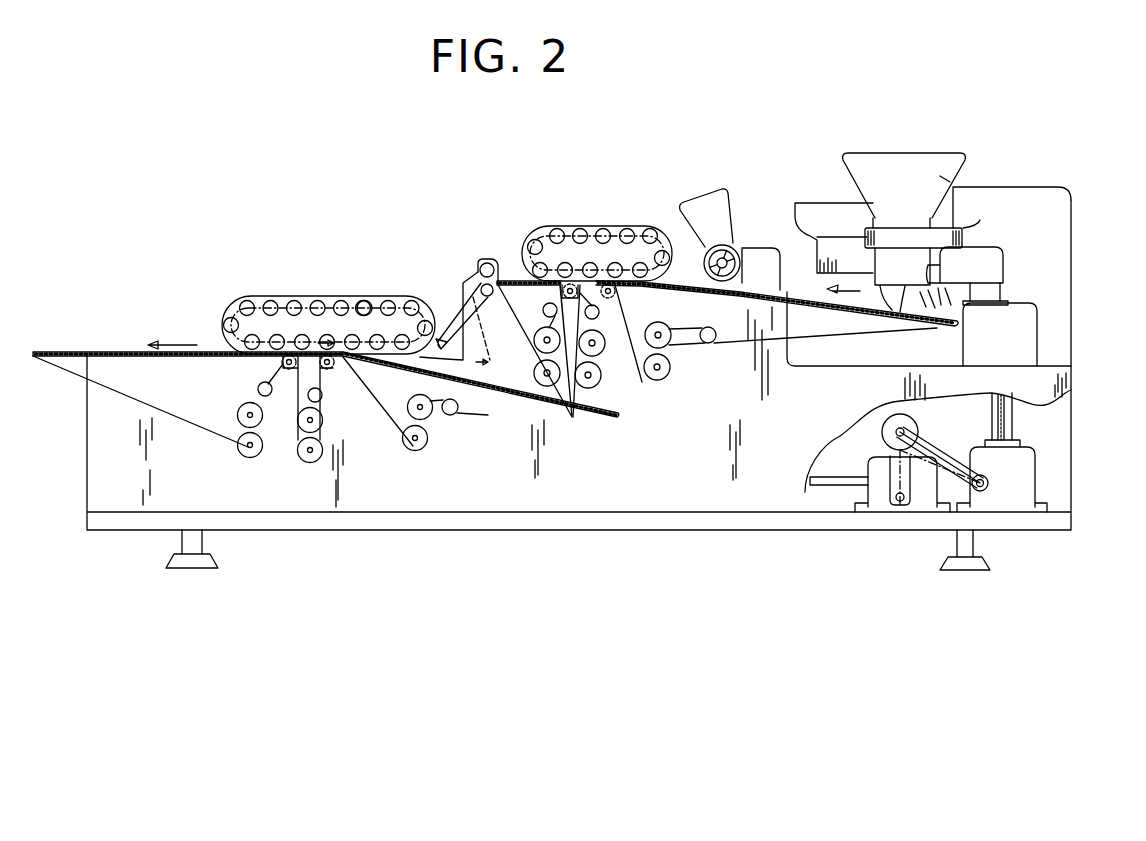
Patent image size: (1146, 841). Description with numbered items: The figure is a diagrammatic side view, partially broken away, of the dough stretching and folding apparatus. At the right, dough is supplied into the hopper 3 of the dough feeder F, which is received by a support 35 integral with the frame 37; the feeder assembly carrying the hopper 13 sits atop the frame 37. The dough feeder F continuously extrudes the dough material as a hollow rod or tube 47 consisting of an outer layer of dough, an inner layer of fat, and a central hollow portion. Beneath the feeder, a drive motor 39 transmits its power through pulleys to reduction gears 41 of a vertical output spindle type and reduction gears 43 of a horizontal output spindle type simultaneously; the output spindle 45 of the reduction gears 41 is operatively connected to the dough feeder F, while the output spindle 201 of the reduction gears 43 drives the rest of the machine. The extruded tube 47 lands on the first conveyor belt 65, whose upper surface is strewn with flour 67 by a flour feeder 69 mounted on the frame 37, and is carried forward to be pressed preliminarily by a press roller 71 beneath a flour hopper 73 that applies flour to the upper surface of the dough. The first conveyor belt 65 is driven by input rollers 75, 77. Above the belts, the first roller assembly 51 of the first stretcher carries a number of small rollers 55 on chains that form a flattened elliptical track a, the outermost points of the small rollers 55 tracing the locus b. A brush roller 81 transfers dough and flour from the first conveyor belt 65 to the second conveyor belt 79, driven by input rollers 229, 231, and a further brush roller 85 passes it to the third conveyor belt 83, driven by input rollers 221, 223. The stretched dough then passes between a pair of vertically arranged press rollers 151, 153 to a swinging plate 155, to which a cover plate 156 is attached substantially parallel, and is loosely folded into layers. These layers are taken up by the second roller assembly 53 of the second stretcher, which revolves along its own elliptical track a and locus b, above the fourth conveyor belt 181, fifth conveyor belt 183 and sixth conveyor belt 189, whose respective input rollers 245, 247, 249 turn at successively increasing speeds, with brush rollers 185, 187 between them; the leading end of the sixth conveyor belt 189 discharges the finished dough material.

The hopper 3 is at (815, 216).
The hopper 13 is at (876, 162).
The support 35 is at (905, 227).
The frame 37 is at (1060, 251).
The drive motor 39 is at (912, 426).
The reduction gears 41 is at (1003, 506).
The reduction gears 43 is at (882, 508).
The output spindle 45 is at (1013, 419).
The hollow rod or tube 47 is at (893, 296).
The first roller assembly 51 is at (579, 224).
The second roller assembly 53 is at (328, 283).
The small rollers 55 is at (249, 302).
The first conveyor belt 65 is at (712, 346).
The flour 67 is at (961, 323).
The flour feeder 69 is at (985, 246).
The press roller 71 is at (730, 246).
The flour hopper 73 is at (710, 209).
The input roller 75 is at (660, 379).
The input roller 77 is at (663, 333).
The second conveyor belt 79 is at (596, 331).
The brush roller 81 is at (615, 293).
The third conveyor belt 83 is at (512, 338).
The brush roller 85 is at (562, 289).
The press roller 151 is at (471, 276).
The press roller 153 is at (487, 262).
The swinging plate 155 is at (432, 320).
The cover plate 156 is at (462, 290).
The fourth conveyor belt 181 is at (376, 425).
The fifth conveyor belt 183 is at (297, 437).
The brush roller 185 is at (329, 372).
The brush roller 187 is at (282, 366).
The sixth conveyor belt 189 is at (117, 398).
The output spindle 201 is at (826, 487).
The input roller 221 is at (545, 386).
The input roller 223 is at (577, 416).
The input roller 229 is at (597, 387).
The input roller 231 is at (598, 373).
The input roller 245 is at (426, 443).
The input roller 247 is at (307, 461).
The input roller 249 is at (240, 449).
The dough feeder F is at (968, 180).
The elliptical track a is at (365, 302).
The locus b is at (341, 302).